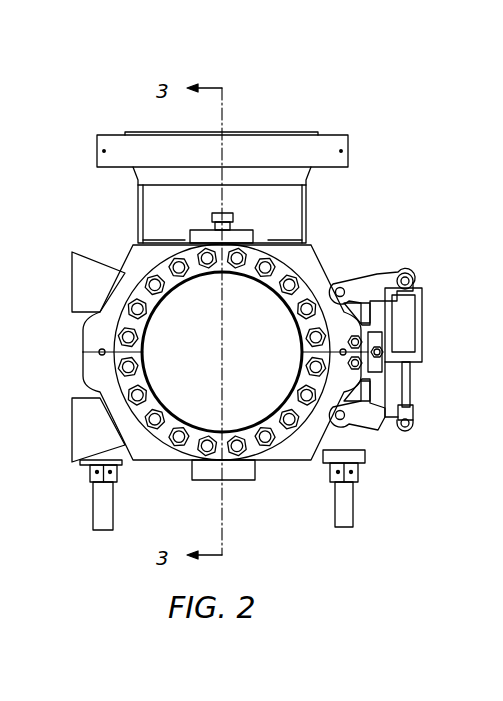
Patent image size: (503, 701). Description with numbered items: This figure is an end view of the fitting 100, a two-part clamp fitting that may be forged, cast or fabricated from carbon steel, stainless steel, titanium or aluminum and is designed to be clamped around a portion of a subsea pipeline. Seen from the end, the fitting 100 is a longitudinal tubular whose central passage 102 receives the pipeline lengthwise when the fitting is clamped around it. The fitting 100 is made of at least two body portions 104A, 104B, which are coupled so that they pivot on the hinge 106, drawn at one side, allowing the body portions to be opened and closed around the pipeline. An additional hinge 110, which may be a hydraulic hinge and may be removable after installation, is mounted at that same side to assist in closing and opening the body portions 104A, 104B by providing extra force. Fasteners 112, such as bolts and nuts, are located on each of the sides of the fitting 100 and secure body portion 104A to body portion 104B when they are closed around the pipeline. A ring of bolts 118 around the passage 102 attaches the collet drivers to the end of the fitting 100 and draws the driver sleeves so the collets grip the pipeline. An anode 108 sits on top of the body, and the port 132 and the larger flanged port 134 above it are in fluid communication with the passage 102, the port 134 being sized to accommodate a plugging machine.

The fitting 100 is at (317, 80).
The passage 102 is at (207, 363).
The body portion 104A is at (312, 253).
The body portion 104B is at (293, 460).
The hinge 106 is at (365, 413).
The anode 108 is at (244, 228).
The hinge 110 is at (421, 320).
The fastener 112 is at (100, 522).
The bolt 118 is at (178, 447).
The port 132 is at (215, 213).
The port 134 is at (333, 132).